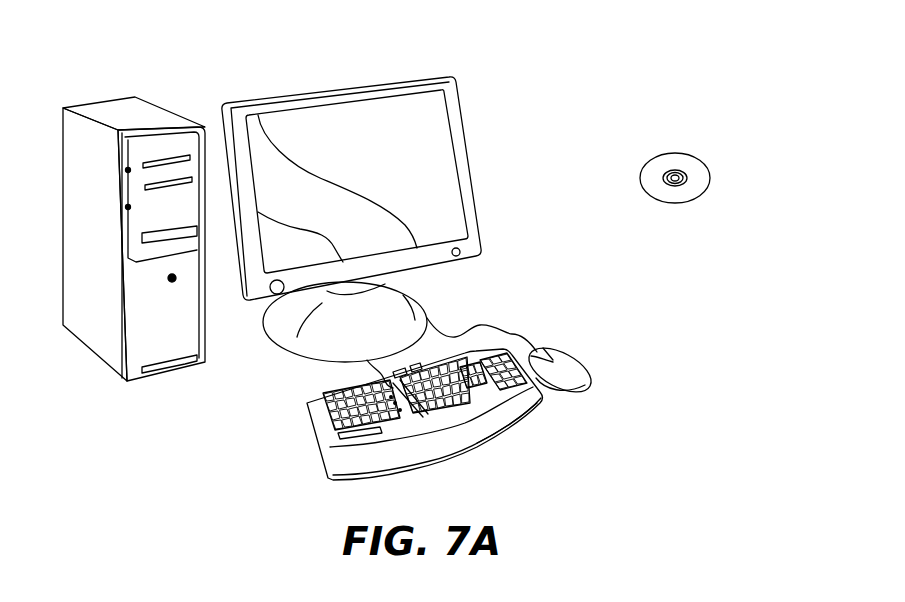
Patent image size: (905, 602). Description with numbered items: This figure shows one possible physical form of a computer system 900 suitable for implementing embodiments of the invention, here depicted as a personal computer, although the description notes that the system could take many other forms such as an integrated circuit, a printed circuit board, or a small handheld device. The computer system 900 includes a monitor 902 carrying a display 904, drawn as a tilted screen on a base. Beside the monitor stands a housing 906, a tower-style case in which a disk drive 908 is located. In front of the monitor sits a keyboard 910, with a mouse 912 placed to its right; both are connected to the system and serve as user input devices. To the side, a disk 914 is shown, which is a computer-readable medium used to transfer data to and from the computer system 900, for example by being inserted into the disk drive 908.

The computer system 900 is at (593, 62).
The monitor 902 is at (472, 187).
The display 904 is at (423, 120).
The housing 906 is at (120, 110).
The disk drive 908 is at (183, 233).
The keyboard 910 is at (323, 448).
The mouse 912 is at (583, 358).
The disk 914 is at (690, 153).